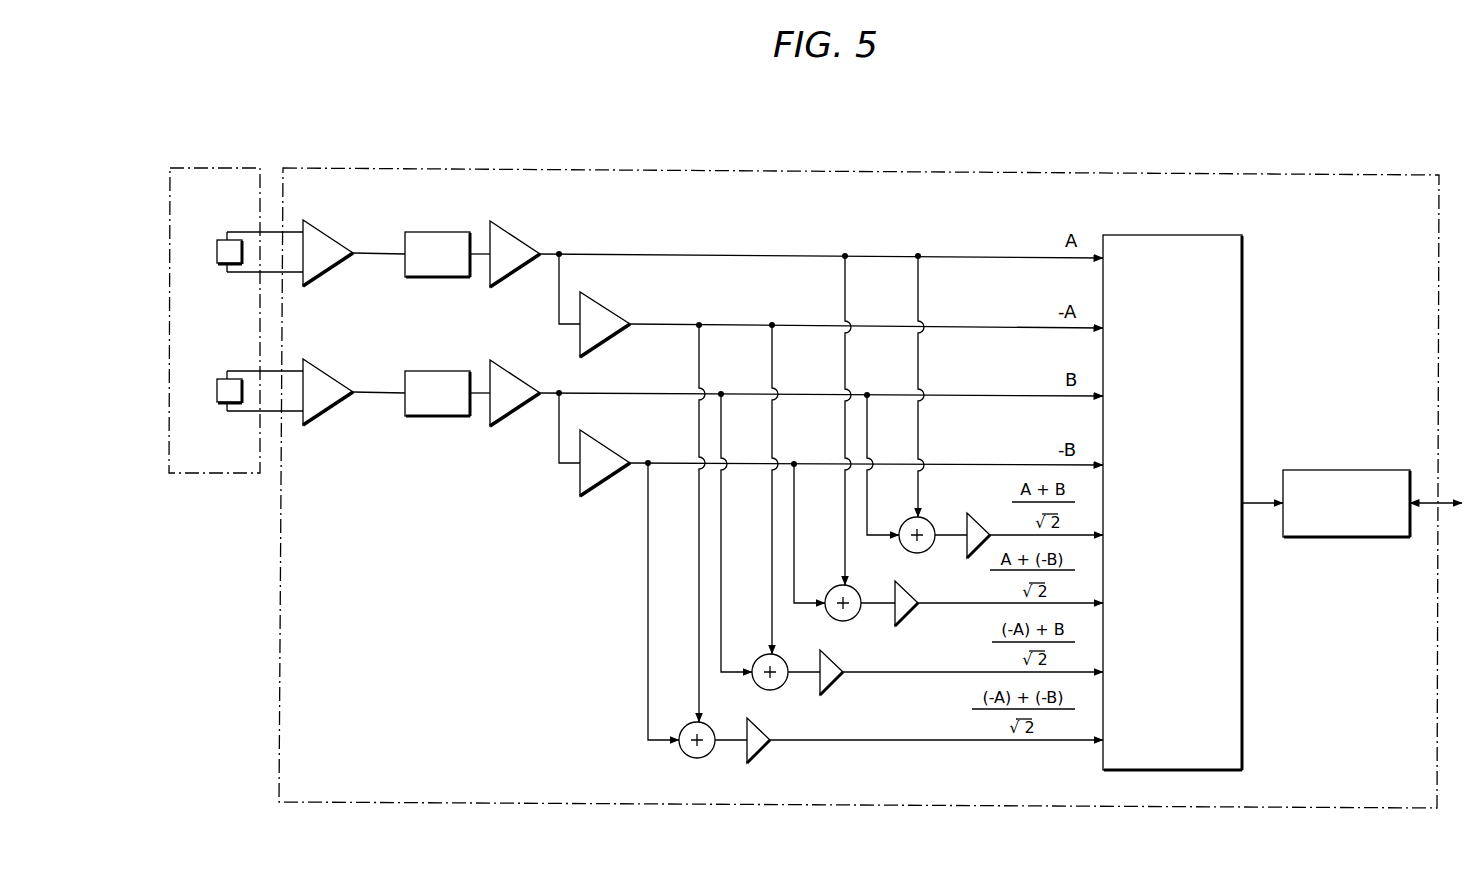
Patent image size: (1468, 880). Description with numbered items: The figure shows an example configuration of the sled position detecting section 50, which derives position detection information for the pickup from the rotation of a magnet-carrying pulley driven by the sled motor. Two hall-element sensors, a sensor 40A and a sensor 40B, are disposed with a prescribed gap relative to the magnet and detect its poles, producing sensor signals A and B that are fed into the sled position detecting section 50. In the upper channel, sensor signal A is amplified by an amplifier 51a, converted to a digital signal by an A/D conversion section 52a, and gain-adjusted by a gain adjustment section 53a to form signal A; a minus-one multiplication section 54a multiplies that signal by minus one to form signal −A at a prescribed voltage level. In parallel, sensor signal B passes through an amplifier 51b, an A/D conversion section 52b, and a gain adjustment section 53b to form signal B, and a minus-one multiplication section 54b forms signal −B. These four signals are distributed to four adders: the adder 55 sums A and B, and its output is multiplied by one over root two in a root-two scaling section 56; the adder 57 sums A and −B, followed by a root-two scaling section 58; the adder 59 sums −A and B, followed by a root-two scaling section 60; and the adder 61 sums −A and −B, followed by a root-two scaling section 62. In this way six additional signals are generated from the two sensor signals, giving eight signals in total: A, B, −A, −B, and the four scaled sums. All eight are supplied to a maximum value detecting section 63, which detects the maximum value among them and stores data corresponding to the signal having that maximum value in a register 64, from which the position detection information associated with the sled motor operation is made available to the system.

The sensor 40A is at (219, 240).
The sensor 40B is at (219, 379).
The sled position detecting section 50 is at (1103, 175).
The amplifier 51a is at (328, 238).
The amplifier 51b is at (328, 377).
The A/D conversion section 52a is at (445, 232).
The A/D conversion section 52b is at (445, 371).
The gain adjustment section 53a is at (517, 238).
The gain adjustment section 53b is at (517, 377).
The −1 multiplication section 54a is at (604, 306).
The −1 multiplication section 54b is at (580, 477).
The adder 55 is at (922, 517).
The 1/√2 section 56 is at (967, 552).
The adder 57 is at (848, 586).
The 1/√2 section 58 is at (895, 620).
The adder 59 is at (776, 655).
The 1/√2 section 60 is at (820, 688).
The adder 61 is at (703, 722).
The 1/√2 section 62 is at (747, 758).
The maximum value detecting section 63 is at (1172, 235).
The register 64 is at (1348, 470).